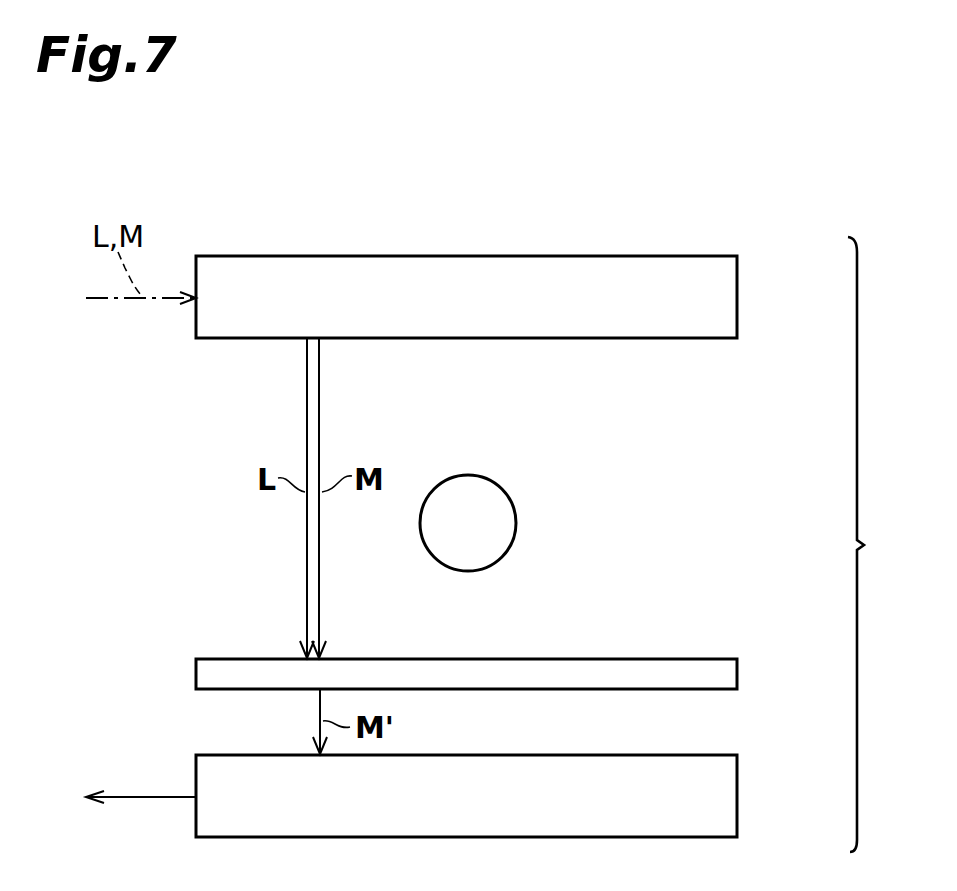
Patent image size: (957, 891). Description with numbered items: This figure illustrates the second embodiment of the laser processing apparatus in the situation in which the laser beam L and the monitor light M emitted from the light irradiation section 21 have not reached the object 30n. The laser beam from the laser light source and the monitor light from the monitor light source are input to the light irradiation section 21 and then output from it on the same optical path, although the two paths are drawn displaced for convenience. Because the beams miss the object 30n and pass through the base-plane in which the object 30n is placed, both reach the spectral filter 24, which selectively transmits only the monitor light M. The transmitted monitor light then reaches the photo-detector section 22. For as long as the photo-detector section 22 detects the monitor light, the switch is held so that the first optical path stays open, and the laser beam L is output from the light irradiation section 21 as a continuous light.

The light irradiation section 21 is at (739, 298).
The spectral filter 24 is at (739, 673).
The photo-detector section 22 is at (739, 795).
The object 30n is at (510, 502).